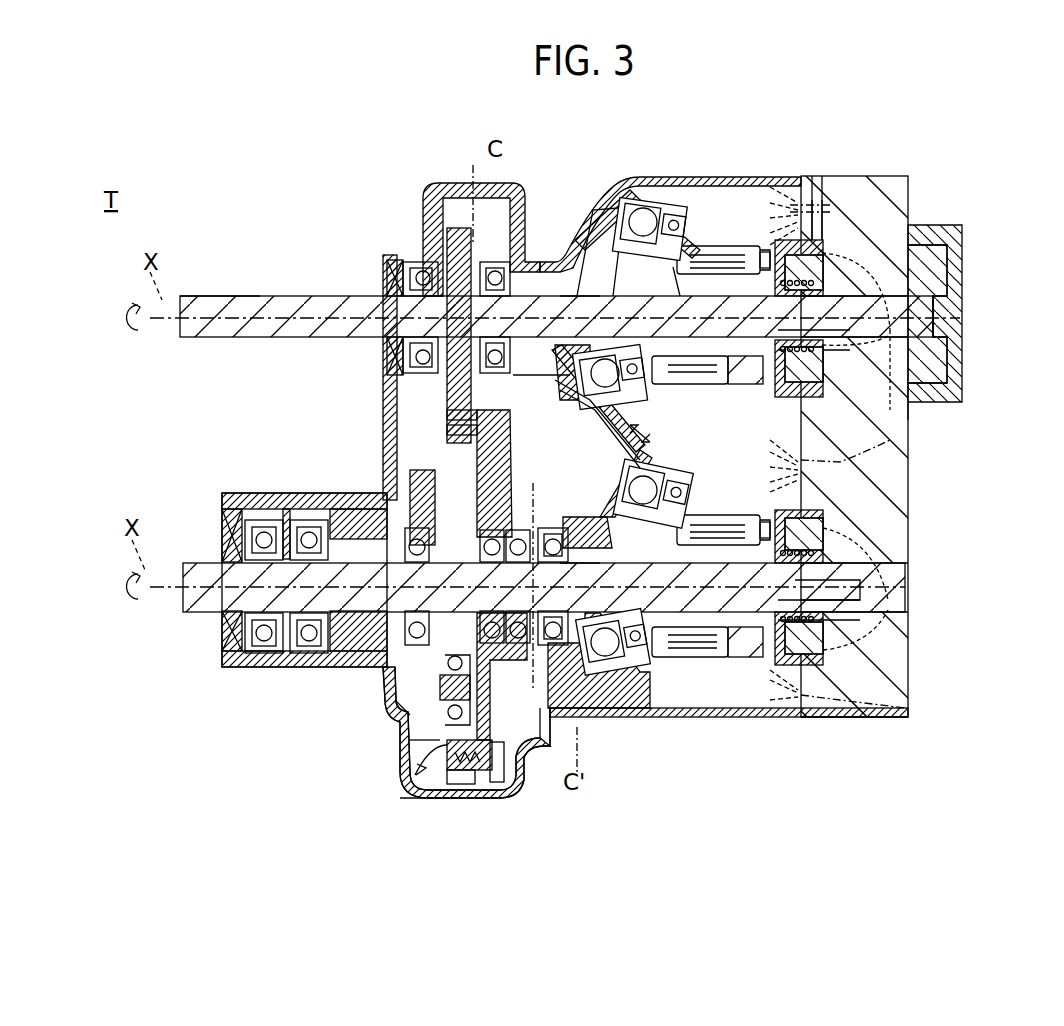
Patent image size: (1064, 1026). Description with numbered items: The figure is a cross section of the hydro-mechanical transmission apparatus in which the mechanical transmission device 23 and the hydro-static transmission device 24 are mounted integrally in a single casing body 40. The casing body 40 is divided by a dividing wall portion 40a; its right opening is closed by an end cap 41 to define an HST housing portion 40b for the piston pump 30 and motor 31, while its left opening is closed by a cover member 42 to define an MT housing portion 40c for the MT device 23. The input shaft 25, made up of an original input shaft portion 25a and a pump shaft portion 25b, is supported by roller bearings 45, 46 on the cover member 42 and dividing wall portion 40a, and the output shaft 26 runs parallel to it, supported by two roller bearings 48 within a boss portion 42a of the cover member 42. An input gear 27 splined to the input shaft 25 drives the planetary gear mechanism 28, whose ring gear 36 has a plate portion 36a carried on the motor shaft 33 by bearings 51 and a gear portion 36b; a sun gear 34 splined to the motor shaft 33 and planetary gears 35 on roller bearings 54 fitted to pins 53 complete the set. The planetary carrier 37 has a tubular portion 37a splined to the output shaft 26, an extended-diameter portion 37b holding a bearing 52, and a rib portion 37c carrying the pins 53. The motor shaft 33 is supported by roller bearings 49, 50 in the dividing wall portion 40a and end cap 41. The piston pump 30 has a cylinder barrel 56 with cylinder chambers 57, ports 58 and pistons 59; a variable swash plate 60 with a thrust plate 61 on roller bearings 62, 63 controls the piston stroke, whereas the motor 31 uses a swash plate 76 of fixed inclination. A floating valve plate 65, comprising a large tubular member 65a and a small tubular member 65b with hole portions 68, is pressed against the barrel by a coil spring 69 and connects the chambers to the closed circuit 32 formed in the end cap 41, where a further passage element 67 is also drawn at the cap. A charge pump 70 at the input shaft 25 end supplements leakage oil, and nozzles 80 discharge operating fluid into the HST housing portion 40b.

The mechanical transmission (MT) device 23 is at (454, 210).
The hydro-static transmission (HST) device 24 is at (924, 174).
The input shaft 25 is at (232, 288).
The original input shaft portion 25a is at (278, 296).
The pump shaft portion 25b is at (540, 380).
The output shaft 26 is at (194, 628).
The input gear 27 is at (383, 377).
The planetary gear mechanism 28 is at (412, 800).
The piston pump 30 is at (736, 172).
The motor 31 is at (745, 718).
The closed circuit 32 is at (996, 436).
The motor shaft 33 is at (584, 517).
The sun gear 34 is at (462, 540).
The planetary gear 35 is at (410, 778).
The ring gear 36 is at (582, 832).
The plate portion 36a is at (546, 790).
The gear portion 36b is at (490, 790).
The planetary carrier 37 is at (372, 678).
The tubular portion 37a is at (335, 680).
The extended-diameter portion 37b is at (330, 508).
The rib portion 37c is at (440, 470).
The casing body 40 is at (622, 752).
The dividing wall portion 40a is at (585, 420).
The HST housing portion 40b is at (631, 728).
The MT housing portion 40c is at (478, 800).
The end cap 41 is at (868, 718).
The cover member 42 is at (378, 254).
The boss portion 42a is at (270, 680).
The roller bearing 45 is at (393, 262).
The roller bearing 46 is at (520, 250).
The roller bearing 48 is at (222, 536).
The roller bearing 49 is at (548, 528).
The roller bearing 50 is at (830, 590).
The bearing 51 is at (520, 530).
The bearing 52 is at (370, 508).
The pin 53 is at (388, 722).
The roller bearing 54 is at (400, 750).
The cylinder barrel 56 is at (698, 245).
The cylinder chamber 57 is at (735, 392).
The port 58 is at (765, 392).
The piston 59 is at (695, 390).
The variable swash plate 60 is at (640, 190).
The thrust plate 61 is at (655, 270).
The roller bearing 62 is at (600, 215).
The roller bearing 63 is at (665, 200).
The valve plate 65 is at (841, 137).
The large tubular member 65a is at (780, 200).
The small tubular member 65b is at (826, 200).
The oil hole 67 is at (890, 418).
The hole portion 68 is at (790, 395).
The coil spring 69 is at (950, 342).
The charge pump 70 is at (950, 228).
The swash plate 76 is at (659, 429).
The nozzle 80 is at (867, 180).